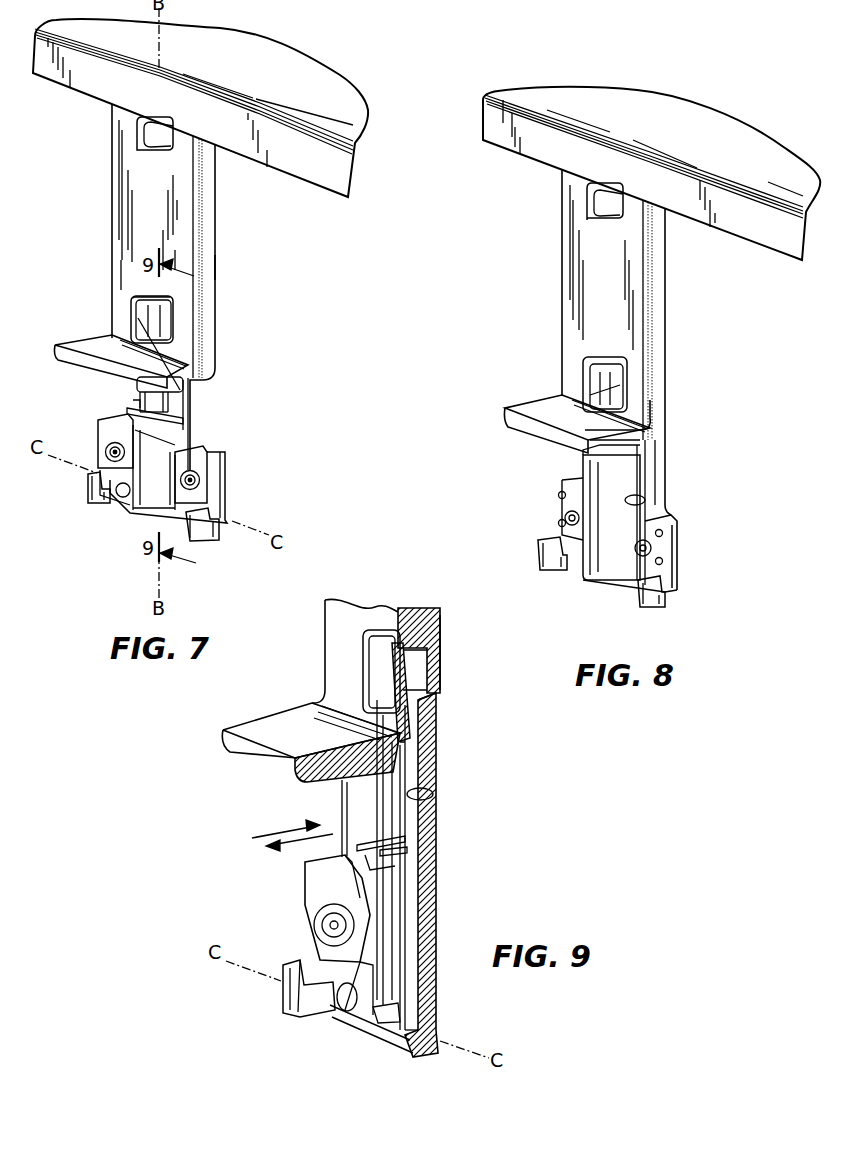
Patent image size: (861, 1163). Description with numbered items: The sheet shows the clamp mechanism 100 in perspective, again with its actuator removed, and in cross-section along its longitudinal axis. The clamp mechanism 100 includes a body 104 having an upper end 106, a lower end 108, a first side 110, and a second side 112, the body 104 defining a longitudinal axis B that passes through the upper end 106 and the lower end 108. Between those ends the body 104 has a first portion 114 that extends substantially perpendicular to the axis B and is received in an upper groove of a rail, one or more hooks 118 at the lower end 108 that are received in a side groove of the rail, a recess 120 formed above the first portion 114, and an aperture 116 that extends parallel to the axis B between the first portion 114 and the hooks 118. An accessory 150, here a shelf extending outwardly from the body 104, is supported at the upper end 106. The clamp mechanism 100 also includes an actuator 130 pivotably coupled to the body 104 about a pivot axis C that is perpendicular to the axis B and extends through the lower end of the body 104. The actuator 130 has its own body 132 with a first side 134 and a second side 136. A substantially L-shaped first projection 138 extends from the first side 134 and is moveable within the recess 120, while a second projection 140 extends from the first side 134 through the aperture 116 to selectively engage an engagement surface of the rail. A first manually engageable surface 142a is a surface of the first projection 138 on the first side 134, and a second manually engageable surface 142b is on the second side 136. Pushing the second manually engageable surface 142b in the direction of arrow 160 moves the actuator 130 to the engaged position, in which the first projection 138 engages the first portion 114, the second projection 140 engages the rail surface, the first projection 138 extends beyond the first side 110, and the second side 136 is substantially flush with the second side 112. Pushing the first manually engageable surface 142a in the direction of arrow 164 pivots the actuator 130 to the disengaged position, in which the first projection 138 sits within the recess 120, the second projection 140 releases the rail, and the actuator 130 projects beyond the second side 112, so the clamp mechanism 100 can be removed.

In FIG. 7, the clamp mechanism 100 is at (268, 296).
In FIG. 8, the clamp mechanism 100 is at (720, 360).
In FIG. 9, the clamp mechanism 100 is at (480, 848).
In FIG. 7, the body 104 is at (210, 205).
In FIG. 8, the body 104 is at (660, 270).
In FIG. 9, the body 104 is at (389, 622).
In FIG. 7, the upper end 106 is at (217, 173).
In FIG. 8, the upper end 106 is at (668, 243).
In FIG. 7, the lower end 108 is at (227, 490).
In FIG. 8, the lower end 108 is at (675, 564).
In FIG. 9, the lower end 108 is at (438, 1022).
In FIG. 7, the first side 110 is at (116, 173).
In FIG. 8, the first side 110 is at (606, 300).
In FIG. 9, the first side 110 is at (333, 687).
In FIG. 7, the second side 112 is at (215, 268).
In FIG. 9, the second side 112 is at (440, 653).
In FIG. 7, the first portion 114 is at (85, 346).
In FIG. 8, the first portion 114 is at (537, 412).
In FIG. 9, the first portion 114 is at (248, 748).
In FIG. 8, the aperture 116 is at (645, 503).
In FIG. 7, the hooks 118 is at (88, 490).
In FIG. 8, the hooks 118 is at (537, 557).
In FIG. 9, the hooks 118 is at (285, 990).
In FIG. 8, the recess 120 is at (628, 405).
In FIG. 9, the recess 120 is at (413, 667).
In FIG. 7, the actuator 130 is at (162, 330).
In FIG. 9, the actuator 130 is at (435, 780).
In FIG. 9, the body 132 is at (438, 935).
In FIG. 9, the first side 134 is at (437, 793).
In FIG. 9, the second side 136 is at (438, 898).
In FIG. 7, the first projection 138 is at (118, 303).
In FIG. 9, the first projection 138 is at (373, 672).
In FIG. 9, the second projection 140 is at (403, 855).
In FIG. 7, the first manually engageable surface 142a is at (130, 303).
In FIG. 9, the first manually engageable surface 142a is at (370, 652).
In FIG. 9, the second manually engageable surface 142b is at (433, 707).
In FIG. 7, the accessory 150 is at (328, 84).
In FIG. 8, the accessory 150 is at (735, 123).
In FIG. 9, the arrow 160 is at (288, 848).
In FIG. 9, the arrow 164 is at (278, 830).